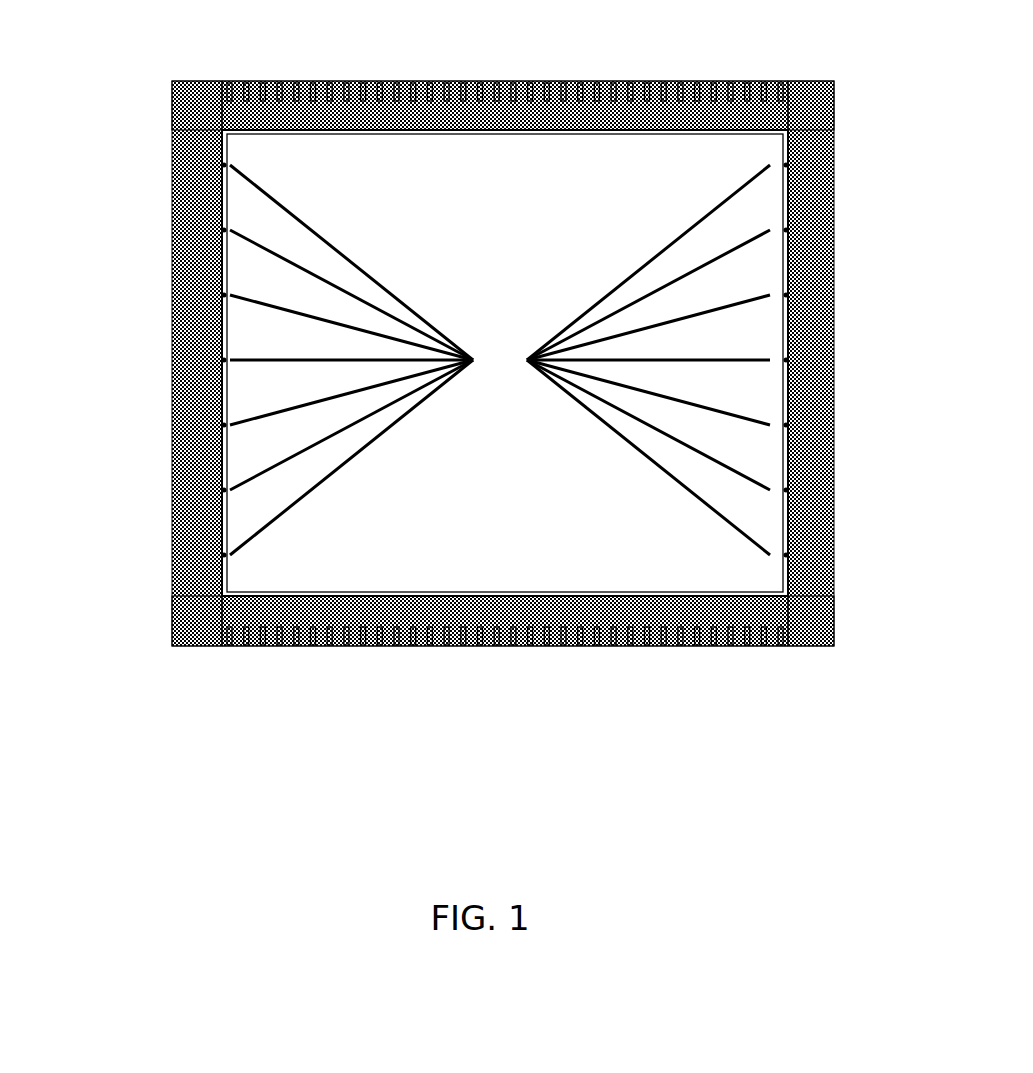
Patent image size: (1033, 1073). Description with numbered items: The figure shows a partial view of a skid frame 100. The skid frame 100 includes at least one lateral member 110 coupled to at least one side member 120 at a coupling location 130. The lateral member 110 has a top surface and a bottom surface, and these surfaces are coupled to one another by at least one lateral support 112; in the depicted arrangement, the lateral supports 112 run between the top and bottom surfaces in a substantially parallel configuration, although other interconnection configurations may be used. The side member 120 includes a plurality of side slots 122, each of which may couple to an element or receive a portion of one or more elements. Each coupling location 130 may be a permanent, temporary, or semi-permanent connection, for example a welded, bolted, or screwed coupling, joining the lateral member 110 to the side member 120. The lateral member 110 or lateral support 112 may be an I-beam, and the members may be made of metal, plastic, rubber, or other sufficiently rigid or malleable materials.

The skid frame 100 is at (137, 712).
The lateral member 110 is at (170, 447).
The lateral support 112 is at (505, 360).
The side member 120 is at (325, 83).
The side slot 122 is at (497, 82).
The coupling location 130 is at (218, 80).